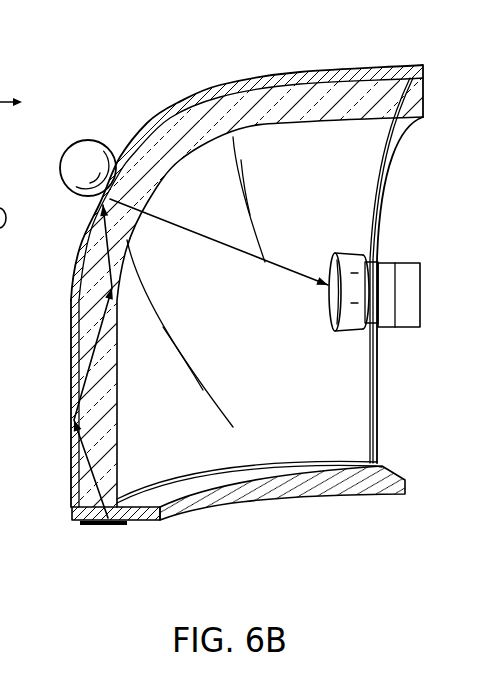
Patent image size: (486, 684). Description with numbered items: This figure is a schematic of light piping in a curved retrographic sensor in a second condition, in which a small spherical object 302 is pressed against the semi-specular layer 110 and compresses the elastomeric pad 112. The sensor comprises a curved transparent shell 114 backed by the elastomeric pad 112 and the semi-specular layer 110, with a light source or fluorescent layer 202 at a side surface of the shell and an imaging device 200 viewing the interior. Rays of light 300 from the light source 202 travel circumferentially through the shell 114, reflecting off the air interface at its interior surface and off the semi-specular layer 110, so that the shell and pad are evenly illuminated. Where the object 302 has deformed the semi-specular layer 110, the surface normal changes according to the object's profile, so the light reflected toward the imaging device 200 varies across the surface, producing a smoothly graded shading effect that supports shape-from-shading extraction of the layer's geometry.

The semi-specular layer 110 is at (224, 268).
The elastomeric pad 112 is at (73, 366).
The transparent shell 114 is at (250, 319).
The imaging device 200 is at (408, 327).
The light source or fluorescent layer 202 is at (105, 526).
The rays of light 300 is at (88, 466).
The small spherical object 302 is at (91, 140).